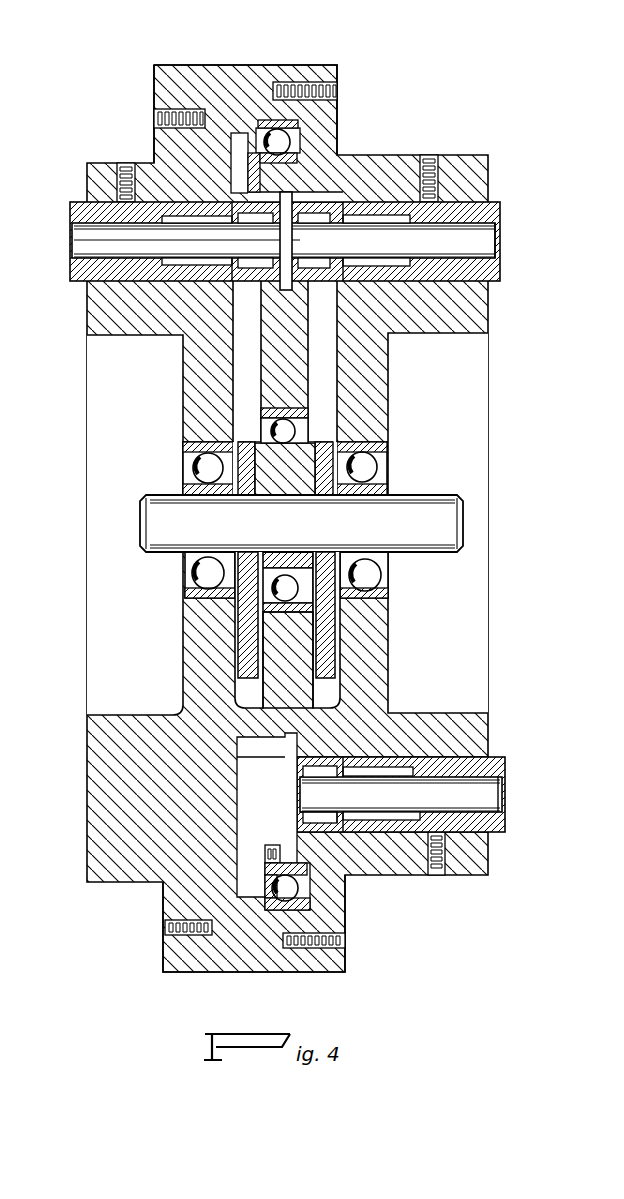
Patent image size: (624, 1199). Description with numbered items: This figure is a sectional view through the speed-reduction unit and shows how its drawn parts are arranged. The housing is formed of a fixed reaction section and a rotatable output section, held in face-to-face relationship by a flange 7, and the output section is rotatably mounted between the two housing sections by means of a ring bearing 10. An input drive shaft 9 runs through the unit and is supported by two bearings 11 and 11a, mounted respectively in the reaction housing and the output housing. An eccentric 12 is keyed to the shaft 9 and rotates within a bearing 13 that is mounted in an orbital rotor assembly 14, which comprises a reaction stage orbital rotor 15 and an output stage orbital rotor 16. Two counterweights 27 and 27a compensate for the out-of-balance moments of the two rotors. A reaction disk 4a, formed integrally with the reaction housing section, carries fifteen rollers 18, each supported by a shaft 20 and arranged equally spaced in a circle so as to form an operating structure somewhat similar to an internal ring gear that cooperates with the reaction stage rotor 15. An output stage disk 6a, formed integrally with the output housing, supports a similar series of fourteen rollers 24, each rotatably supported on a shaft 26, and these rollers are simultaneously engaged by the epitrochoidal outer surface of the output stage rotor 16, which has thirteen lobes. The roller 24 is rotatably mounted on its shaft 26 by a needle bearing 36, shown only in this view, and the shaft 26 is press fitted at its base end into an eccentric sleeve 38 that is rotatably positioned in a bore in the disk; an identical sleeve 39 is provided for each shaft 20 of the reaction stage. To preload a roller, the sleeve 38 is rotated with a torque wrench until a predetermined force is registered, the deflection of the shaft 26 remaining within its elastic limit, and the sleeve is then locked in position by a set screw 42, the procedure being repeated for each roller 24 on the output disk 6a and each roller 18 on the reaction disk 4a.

The reaction disk 4a is at (176, 338).
The output stage disk 6a is at (478, 336).
The flange 7 is at (312, 68).
The input drive shaft 9 is at (167, 547).
The ring bearing 10 is at (292, 140).
The bearing 11 is at (200, 470).
The bearing 11a is at (380, 467).
The eccentric 12 is at (280, 470).
The bearing 13 is at (298, 440).
The orbital rotor assembly 14 is at (398, 630).
The reaction stage orbital rotor 15 is at (252, 315).
The output stage orbital rotor 16 is at (315, 315).
The roller 18 is at (215, 172).
The shaft 20 is at (86, 250).
The roller 24 is at (288, 205).
The shaft 26 is at (503, 238).
The counterweight 27 is at (245, 662).
The counterweight 27a is at (330, 660).
The needle bearing 36 is at (300, 822).
The eccentric sleeve 38 is at (502, 205).
The sleeve 39 is at (68, 212).
The set screw 42 is at (430, 157).